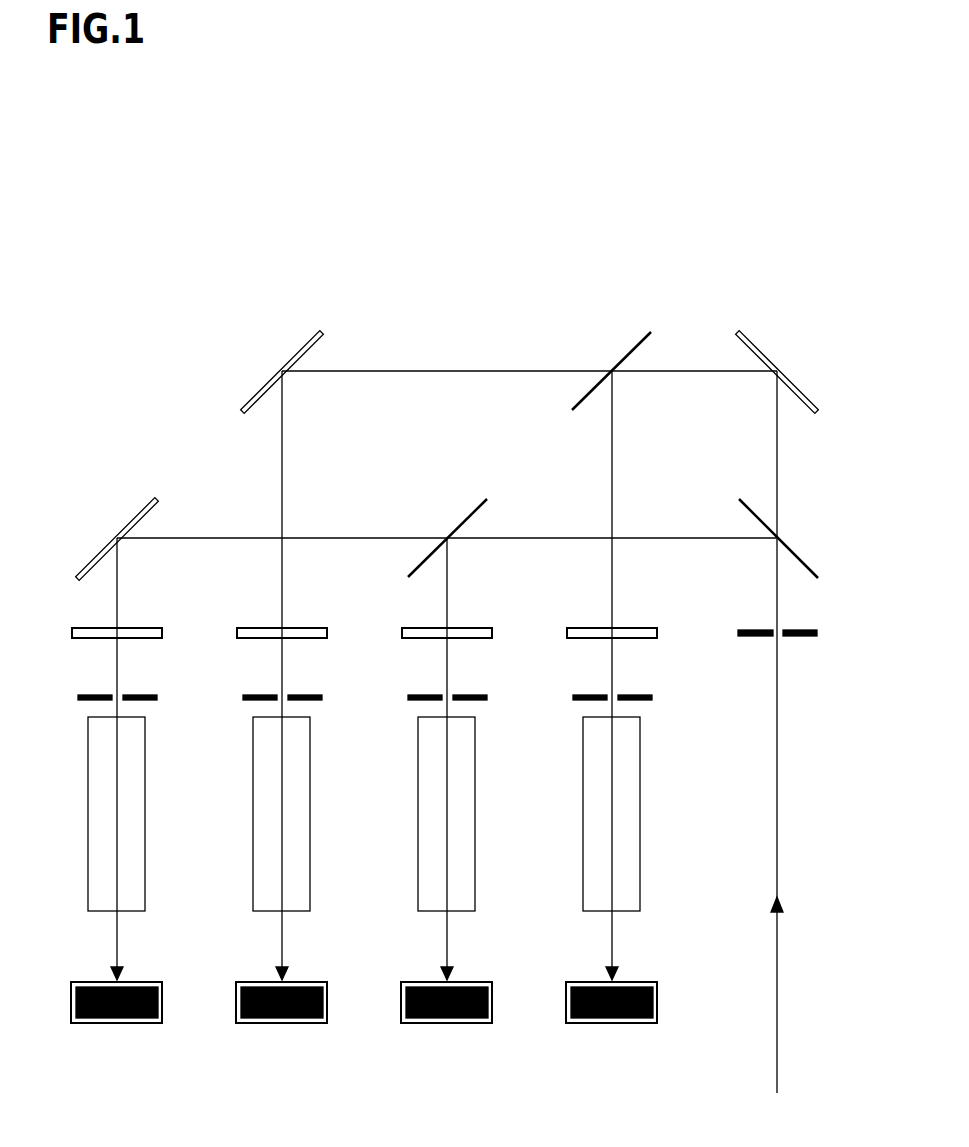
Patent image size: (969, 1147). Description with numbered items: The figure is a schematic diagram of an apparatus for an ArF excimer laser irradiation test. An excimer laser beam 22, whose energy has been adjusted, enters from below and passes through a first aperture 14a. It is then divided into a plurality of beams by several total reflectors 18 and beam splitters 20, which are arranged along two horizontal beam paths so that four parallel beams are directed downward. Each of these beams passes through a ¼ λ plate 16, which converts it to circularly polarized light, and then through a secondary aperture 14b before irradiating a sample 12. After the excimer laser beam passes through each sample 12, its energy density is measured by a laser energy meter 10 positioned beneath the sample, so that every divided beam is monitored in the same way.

The laser energy meter 10 is at (115, 1010).
The sample 12 is at (127, 816).
The first aperture 14a is at (800, 631).
The secondary aperture 14b is at (138, 693).
The ¼ λ plate 16 is at (142, 632).
The total reflector 18 is at (297, 352).
The beam splitter 20 is at (632, 348).
The excimer laser beam 22 is at (779, 1062).